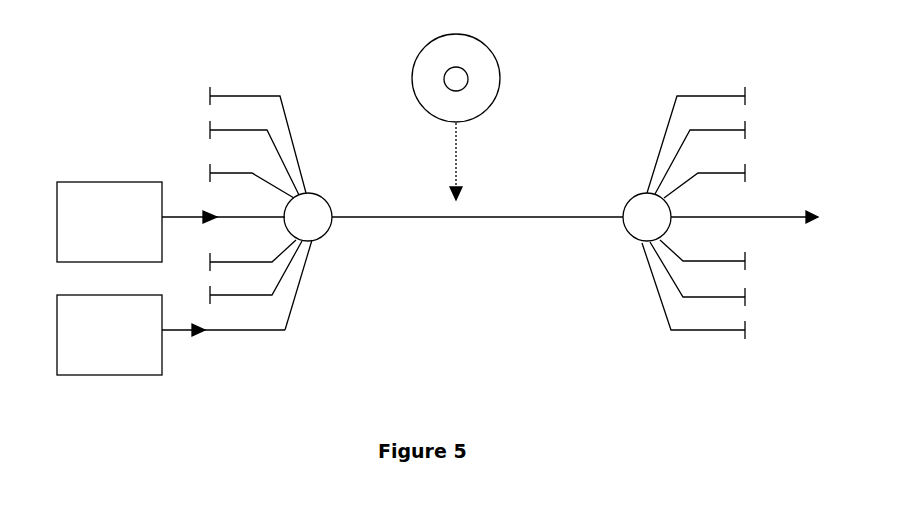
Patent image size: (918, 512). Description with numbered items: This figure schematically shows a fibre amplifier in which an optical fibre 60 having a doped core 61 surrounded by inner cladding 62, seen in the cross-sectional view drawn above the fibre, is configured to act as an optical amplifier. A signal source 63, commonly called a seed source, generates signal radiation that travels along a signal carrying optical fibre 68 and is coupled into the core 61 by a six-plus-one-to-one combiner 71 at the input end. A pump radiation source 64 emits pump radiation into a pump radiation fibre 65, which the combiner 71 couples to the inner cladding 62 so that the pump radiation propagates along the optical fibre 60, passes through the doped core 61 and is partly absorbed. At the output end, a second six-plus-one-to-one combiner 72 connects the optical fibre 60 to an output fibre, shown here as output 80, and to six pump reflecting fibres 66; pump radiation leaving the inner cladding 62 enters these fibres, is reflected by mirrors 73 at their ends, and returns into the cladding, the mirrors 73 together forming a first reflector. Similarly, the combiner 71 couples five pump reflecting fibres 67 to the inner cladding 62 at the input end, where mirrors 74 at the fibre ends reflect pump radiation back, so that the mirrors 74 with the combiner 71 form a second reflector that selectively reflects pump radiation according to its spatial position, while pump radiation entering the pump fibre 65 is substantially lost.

The optical fibre 60 is at (497, 101).
The doped core 61 is at (462, 70).
The inner cladding 62 is at (457, 48).
The signal source 63 is at (109, 222).
The pump radiation source 64 is at (109, 335).
The pump radiation fibre 65 is at (240, 332).
The pump reflecting fibres 66 is at (700, 174).
The pump reflecting fibres 67 is at (267, 130).
The signal carrying optical fibre 68 is at (193, 217).
The 6+1:1 combiner 71 is at (315, 207).
The 6+1:1 combiner 72 is at (640, 205).
The mirrors 73 is at (745, 173).
The mirrors 74 is at (212, 173).
The output 80 is at (753, 217).